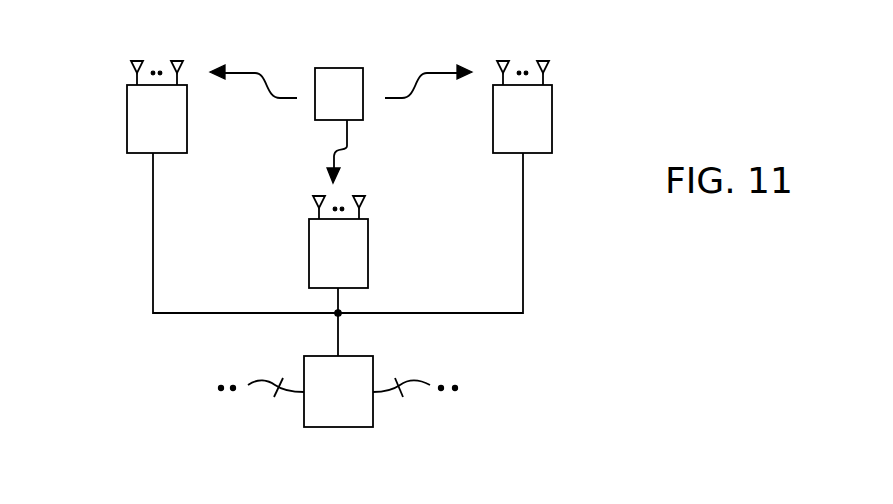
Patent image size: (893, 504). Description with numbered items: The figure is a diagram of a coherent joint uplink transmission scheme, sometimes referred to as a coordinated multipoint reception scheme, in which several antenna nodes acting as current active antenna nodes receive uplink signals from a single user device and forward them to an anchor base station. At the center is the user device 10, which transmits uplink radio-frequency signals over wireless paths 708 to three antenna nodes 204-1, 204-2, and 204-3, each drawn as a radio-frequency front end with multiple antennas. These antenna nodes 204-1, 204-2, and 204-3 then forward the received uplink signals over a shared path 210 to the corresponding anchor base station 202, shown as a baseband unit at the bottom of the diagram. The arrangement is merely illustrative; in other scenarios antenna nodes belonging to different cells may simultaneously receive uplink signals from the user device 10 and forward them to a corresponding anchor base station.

The user device 10 is at (339, 94).
The wireless paths 708 is at (258, 73).
The antenna node 204-1 is at (120, 60).
The antenna node 204-2 is at (560, 58).
The antenna node 204-3 is at (375, 195).
The path 210 is at (153, 248).
The anchor base station 202 is at (337, 427).